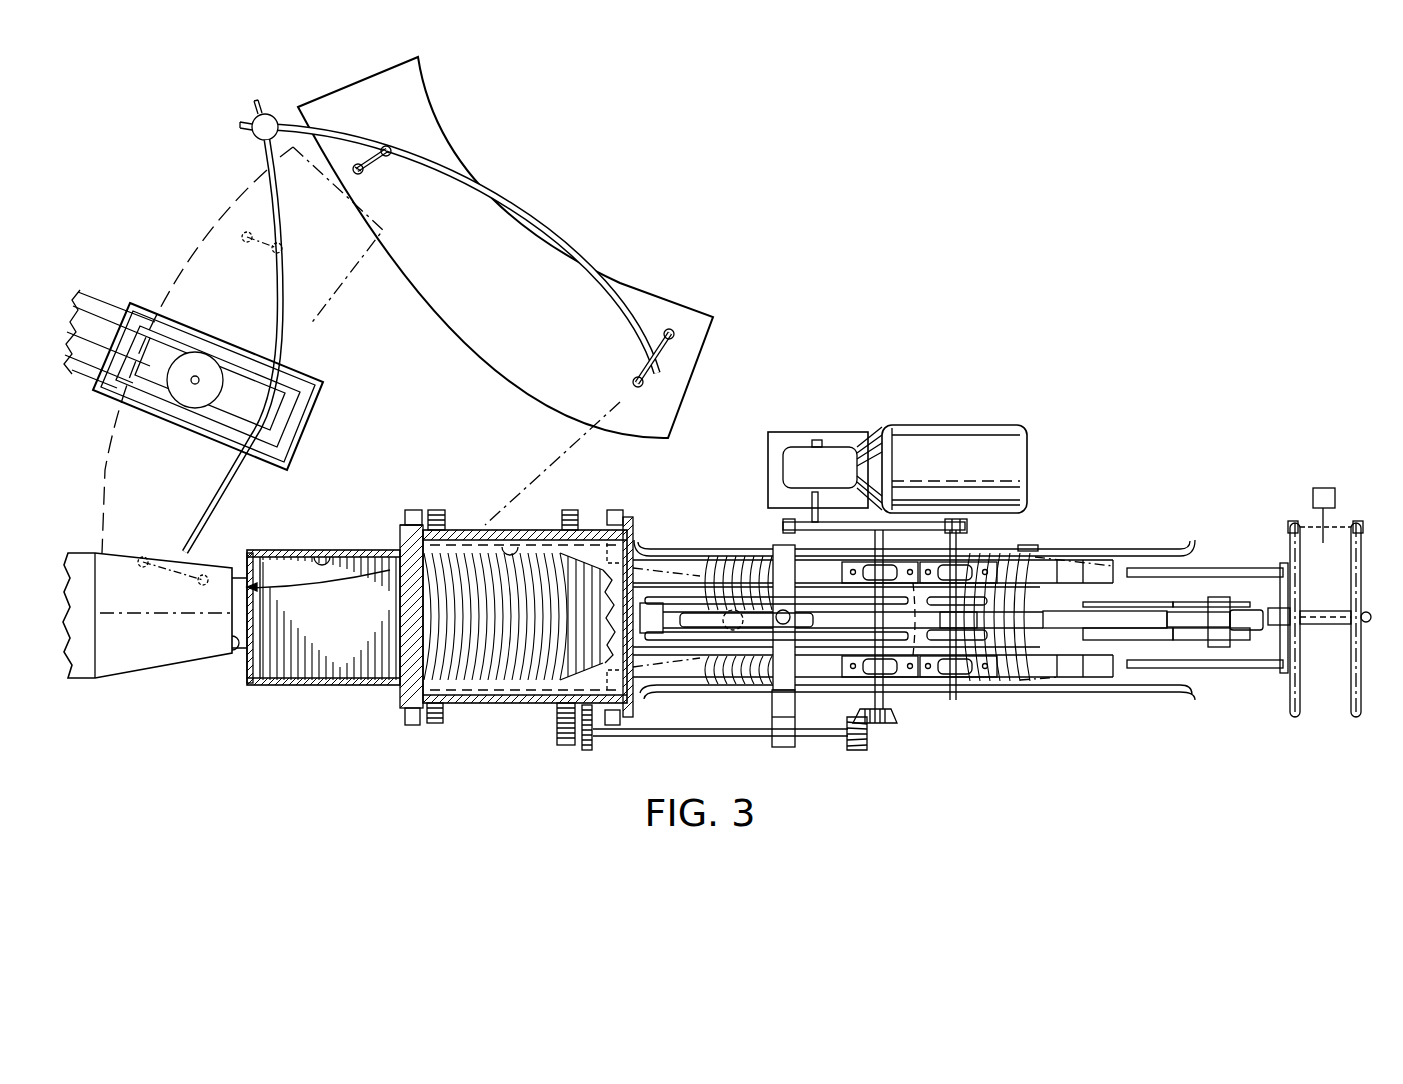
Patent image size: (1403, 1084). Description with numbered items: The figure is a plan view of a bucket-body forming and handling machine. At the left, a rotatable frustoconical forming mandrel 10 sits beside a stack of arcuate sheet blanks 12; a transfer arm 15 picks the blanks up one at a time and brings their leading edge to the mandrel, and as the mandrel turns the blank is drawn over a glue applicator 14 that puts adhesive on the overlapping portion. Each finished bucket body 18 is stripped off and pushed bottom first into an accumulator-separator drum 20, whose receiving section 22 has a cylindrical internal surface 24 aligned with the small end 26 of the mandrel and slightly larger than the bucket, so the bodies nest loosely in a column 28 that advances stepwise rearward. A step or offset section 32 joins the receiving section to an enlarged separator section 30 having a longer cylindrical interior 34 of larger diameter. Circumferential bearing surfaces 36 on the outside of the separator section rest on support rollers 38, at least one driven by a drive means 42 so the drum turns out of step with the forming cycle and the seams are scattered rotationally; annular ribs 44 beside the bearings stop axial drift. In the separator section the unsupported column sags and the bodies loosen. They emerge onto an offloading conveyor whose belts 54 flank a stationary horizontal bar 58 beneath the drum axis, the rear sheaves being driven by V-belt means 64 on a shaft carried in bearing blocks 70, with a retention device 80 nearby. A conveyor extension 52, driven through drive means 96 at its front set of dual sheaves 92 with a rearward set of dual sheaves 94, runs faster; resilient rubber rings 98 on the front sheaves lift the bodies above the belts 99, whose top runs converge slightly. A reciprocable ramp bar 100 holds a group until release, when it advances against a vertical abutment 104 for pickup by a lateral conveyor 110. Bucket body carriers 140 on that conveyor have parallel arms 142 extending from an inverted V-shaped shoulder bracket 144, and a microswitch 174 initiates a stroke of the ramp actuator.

The forming mandrel 10 is at (140, 658).
The stack of arcuate sheet blanks 12 is at (627, 283).
The glue applicator 14 is at (313, 408).
The transfer arm 15 is at (437, 163).
The bucket body 18 is at (1117, 667).
The accumulator-separator drum 20 is at (358, 700).
The receiving section 22 is at (308, 686).
The cylindrical internal surface 24 is at (322, 556).
The small end 26 is at (240, 650).
The column 28 is at (356, 630).
The separator section 30 is at (517, 705).
The step or offset section 32 is at (400, 527).
The cylindrical interior 34 is at (504, 540).
The circumferential bearing surfaces 36 is at (420, 510).
The support rollers 38 is at (410, 723).
The drive means 42 is at (696, 737).
The annular ribs 44 is at (402, 713).
The conveyor extension 52 is at (1200, 640).
The belts 54 is at (810, 607).
The stationary horizontal bar 58 is at (793, 593).
The V-belt means 64 is at (783, 522).
The bearing blocks 70 is at (907, 563).
The retention device 80 is at (775, 607).
The front set of dual sheaves 92 is at (937, 650).
The rearward set of dual sheaves 94 is at (1240, 600).
The drive means 96 is at (968, 525).
The resilient rubber rings 98 is at (987, 640).
The belts 99 is at (1137, 600).
The ramp bar 100 is at (1175, 603).
The vertical abutment 104 is at (1263, 630).
The lateral conveyor 110 is at (1368, 690).
The bucket body carriers 140 is at (1282, 563).
The parallel arms 142 is at (1192, 568).
The shoulder bracket 144 is at (1283, 673).
The microswitch 174 is at (1335, 492).